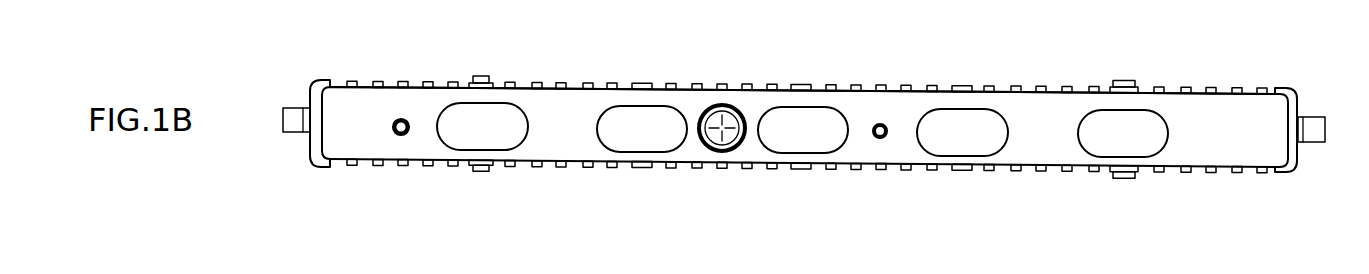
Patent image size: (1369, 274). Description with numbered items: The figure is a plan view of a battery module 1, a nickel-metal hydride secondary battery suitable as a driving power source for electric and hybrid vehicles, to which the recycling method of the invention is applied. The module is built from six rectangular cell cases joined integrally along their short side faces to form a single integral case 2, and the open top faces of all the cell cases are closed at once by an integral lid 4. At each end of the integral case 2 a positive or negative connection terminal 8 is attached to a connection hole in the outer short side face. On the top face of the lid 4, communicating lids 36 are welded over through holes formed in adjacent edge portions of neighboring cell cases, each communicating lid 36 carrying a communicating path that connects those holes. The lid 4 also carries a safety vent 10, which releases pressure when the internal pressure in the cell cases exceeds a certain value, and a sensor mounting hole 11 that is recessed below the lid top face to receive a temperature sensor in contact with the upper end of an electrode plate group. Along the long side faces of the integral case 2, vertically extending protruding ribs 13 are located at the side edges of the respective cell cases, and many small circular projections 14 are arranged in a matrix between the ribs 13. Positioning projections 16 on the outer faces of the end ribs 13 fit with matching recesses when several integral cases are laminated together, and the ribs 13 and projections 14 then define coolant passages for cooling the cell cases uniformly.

The battery module 1 is at (307, 81).
The integral case 2 is at (299, 146).
The integral lid 4 is at (338, 88).
The connection terminal 8 is at (283, 121).
The safety vent 10 is at (727, 107).
The sensor mounting hole 11 is at (402, 138).
The protruding rib 13 is at (470, 83).
The circular projection 14 is at (401, 81).
The projection 16 is at (490, 76).
The communicating lid 36 is at (502, 148).